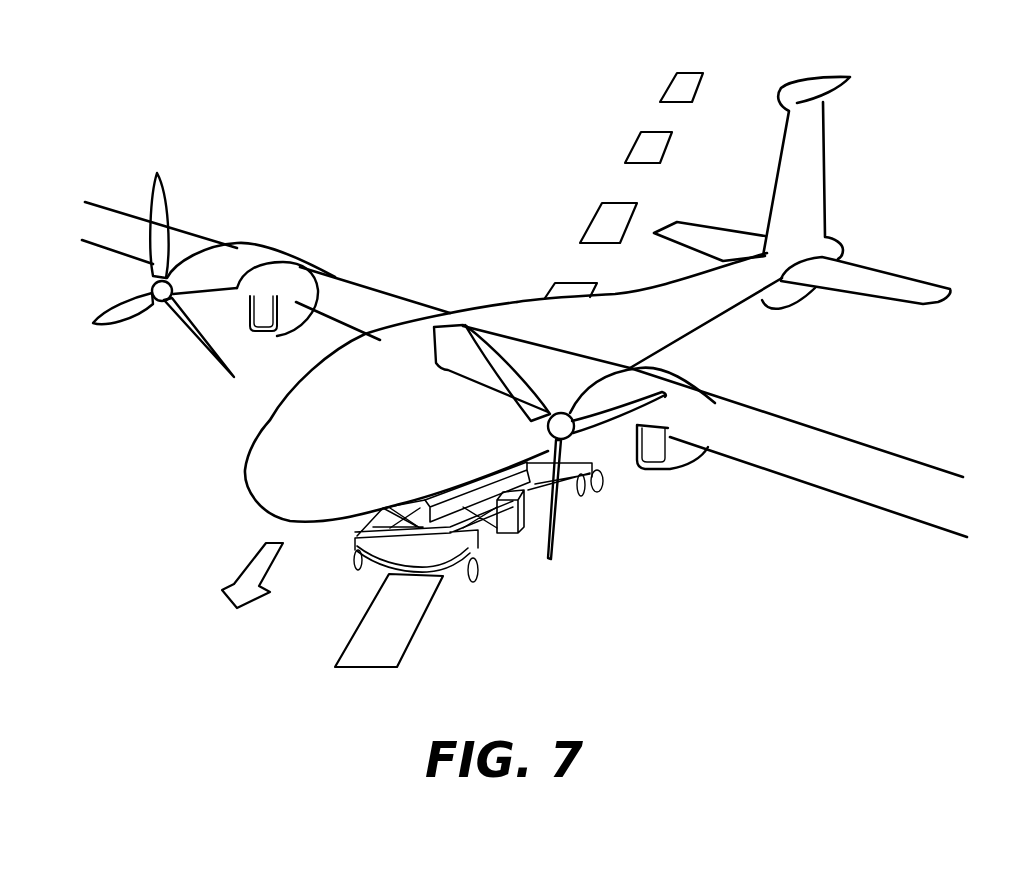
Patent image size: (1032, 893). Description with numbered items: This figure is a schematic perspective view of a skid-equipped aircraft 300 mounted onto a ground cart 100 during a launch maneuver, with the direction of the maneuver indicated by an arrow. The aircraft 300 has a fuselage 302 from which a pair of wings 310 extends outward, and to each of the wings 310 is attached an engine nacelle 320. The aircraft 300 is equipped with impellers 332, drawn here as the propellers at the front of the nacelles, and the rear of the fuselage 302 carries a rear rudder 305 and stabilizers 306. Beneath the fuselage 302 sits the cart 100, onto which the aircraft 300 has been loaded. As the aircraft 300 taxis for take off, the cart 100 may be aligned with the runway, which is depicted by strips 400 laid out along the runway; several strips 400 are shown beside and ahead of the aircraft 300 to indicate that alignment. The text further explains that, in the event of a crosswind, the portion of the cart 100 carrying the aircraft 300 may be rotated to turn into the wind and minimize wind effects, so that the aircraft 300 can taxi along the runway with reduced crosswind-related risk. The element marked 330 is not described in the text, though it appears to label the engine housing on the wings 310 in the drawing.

The cart 100 is at (518, 576).
The aircraft 300 is at (325, 483).
The fuselage 302 is at (607, 297).
The rear rudder 305 is at (813, 168).
The stabilizers 306 is at (724, 236).
The wings 310 is at (383, 302).
The engine nacelle 320 is at (287, 313).
The engine nacelle 330 is at (664, 379).
The impellers 332 is at (165, 201).
The strips 400 is at (598, 213).